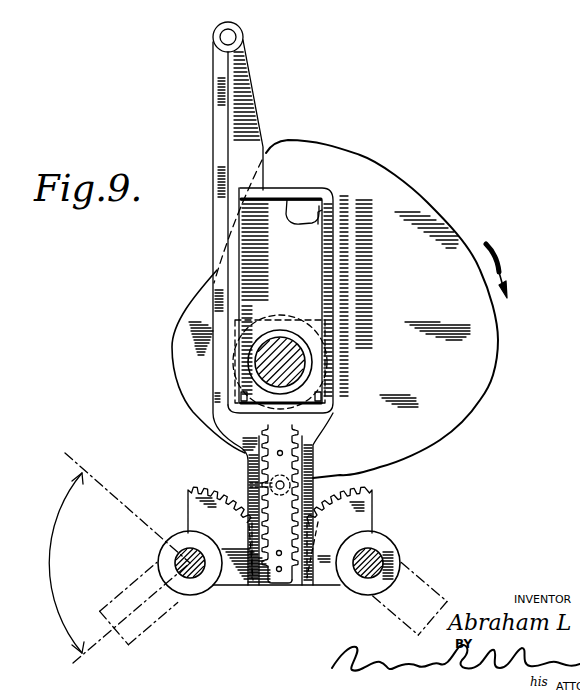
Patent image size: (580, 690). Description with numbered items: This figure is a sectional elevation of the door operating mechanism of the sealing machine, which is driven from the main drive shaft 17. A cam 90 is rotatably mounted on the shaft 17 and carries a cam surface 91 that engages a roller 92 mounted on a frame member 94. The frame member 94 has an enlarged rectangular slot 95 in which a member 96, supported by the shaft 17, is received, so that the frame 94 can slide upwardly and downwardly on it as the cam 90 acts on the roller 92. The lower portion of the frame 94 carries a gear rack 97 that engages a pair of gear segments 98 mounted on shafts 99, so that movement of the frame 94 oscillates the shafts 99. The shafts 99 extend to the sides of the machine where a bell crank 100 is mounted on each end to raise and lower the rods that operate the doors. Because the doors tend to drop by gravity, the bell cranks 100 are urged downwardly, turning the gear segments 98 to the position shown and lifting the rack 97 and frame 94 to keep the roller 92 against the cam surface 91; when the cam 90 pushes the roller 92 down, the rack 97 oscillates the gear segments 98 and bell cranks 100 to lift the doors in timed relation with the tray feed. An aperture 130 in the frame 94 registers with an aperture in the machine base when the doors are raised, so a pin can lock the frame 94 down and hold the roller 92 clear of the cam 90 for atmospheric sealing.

The aperture 130 is at (243, 31).
The cam 90 is at (481, 333).
The cam surface 91 is at (470, 234).
The frame member 94 is at (305, 178).
The enlarged rectangular slot 95 is at (288, 200).
The member 96 is at (317, 320).
The main drive shaft 17 is at (300, 361).
The roller 92 is at (270, 481).
The gear rack 97 is at (281, 583).
The gear segments 98 is at (190, 507).
The shafts 99 is at (197, 576).
The bell crank 100 is at (175, 612).